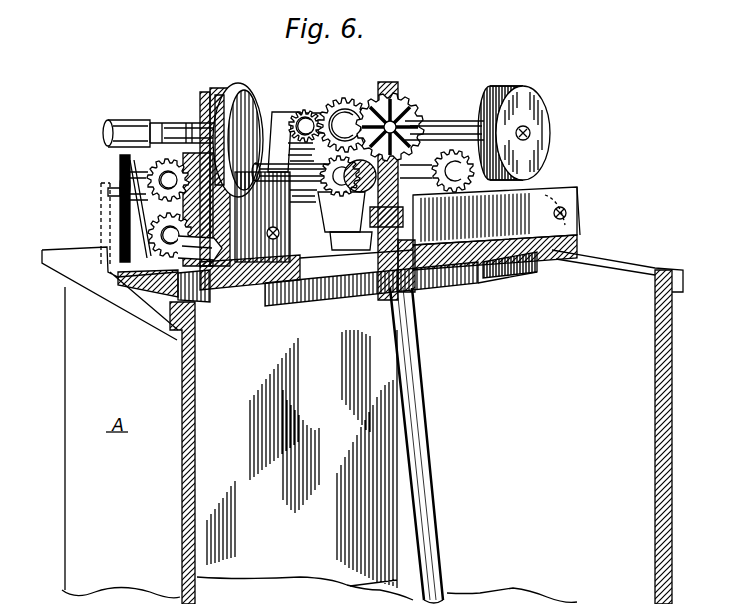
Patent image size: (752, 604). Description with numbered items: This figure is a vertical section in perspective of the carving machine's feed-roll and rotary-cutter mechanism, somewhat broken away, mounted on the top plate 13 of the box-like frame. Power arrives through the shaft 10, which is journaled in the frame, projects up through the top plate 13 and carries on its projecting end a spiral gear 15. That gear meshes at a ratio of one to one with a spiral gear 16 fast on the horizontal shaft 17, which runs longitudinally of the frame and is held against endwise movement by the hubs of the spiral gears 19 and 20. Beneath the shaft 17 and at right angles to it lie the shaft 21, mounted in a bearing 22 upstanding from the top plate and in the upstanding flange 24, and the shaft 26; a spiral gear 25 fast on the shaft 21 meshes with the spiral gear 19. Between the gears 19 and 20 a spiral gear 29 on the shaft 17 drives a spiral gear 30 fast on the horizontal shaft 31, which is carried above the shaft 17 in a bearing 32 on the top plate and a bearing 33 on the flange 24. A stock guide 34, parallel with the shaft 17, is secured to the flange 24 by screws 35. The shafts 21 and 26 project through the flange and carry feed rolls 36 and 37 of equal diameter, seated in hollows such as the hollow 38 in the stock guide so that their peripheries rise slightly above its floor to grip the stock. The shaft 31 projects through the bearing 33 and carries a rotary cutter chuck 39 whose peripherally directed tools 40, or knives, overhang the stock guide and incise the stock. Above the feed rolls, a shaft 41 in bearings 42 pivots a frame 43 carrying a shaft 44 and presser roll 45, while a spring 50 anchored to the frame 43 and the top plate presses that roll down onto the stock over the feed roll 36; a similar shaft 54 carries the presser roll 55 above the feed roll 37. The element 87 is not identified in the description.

The shaft 10 is at (415, 477).
The top plate 13 is at (128, 216).
The spiral gear 15 is at (351, 242).
The spiral gear 16 is at (450, 121).
The horizontal shaft 17 is at (128, 182).
The spiral gear 19 is at (188, 123).
The spiral gear 20 is at (470, 120).
The shaft 21 is at (163, 287).
The bearing 22 is at (140, 246).
The upstanding flange 24 is at (550, 172).
The spiral gear 25 is at (108, 240).
The shaft 26 is at (578, 196).
The spiral gear 29 is at (341, 212).
The spiral gear 30 is at (346, 99).
The horizontal shaft 31 is at (306, 110).
The bearing 32 is at (298, 116).
The bearing 33 is at (378, 112).
The stock guide 34 is at (476, 285).
The screws 35 is at (422, 270).
The feed roll 36 is at (232, 302).
The feed roll 37 is at (524, 272).
The hollow 38 is at (570, 187).
The rotary cutter chuck 39 is at (406, 98).
The tools 40 is at (418, 106).
The shaft 41 is at (175, 123).
The bearings 42 is at (125, 172).
The frame 43 is at (147, 120).
The shaft 44 is at (205, 118).
The presser roll 45 is at (234, 86).
The spring 50 is at (150, 206).
The shaft 54 is at (492, 108).
The presser roll 55 is at (530, 103).
The upright 87 is at (272, 112).